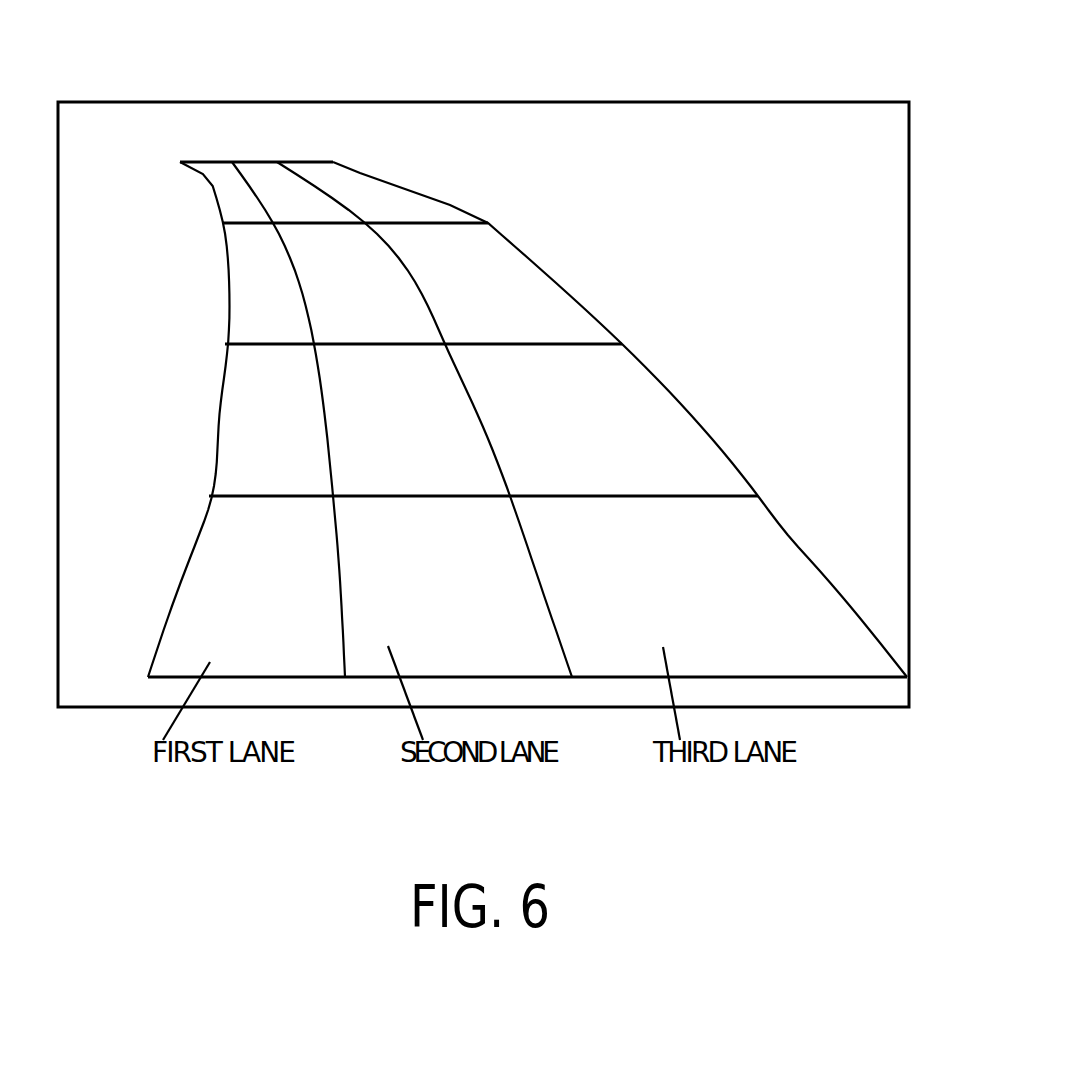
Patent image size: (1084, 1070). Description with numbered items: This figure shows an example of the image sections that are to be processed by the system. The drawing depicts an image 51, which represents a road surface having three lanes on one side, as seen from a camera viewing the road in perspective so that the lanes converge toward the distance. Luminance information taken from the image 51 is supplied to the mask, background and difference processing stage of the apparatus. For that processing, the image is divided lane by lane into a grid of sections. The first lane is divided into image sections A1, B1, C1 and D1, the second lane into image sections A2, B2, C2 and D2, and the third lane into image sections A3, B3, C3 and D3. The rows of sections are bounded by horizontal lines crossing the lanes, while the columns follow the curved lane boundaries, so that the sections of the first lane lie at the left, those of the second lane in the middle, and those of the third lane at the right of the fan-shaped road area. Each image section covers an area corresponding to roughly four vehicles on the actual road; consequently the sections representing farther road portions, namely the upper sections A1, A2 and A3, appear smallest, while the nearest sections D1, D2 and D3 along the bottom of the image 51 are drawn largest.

The image 51 is at (680, 102).
The image section A1 is at (226, 193).
The image section A2 is at (298, 193).
The image section A3 is at (382, 193).
The image section B1 is at (268, 283).
The image section B2 is at (359, 283).
The image section B3 is at (493, 283).
The image section C1 is at (271, 420).
The image section C2 is at (412, 420).
The image section C3 is at (601, 420).
The image section D1 is at (246, 586).
The image section D2 is at (452, 586).
The image section D3 is at (708, 586).